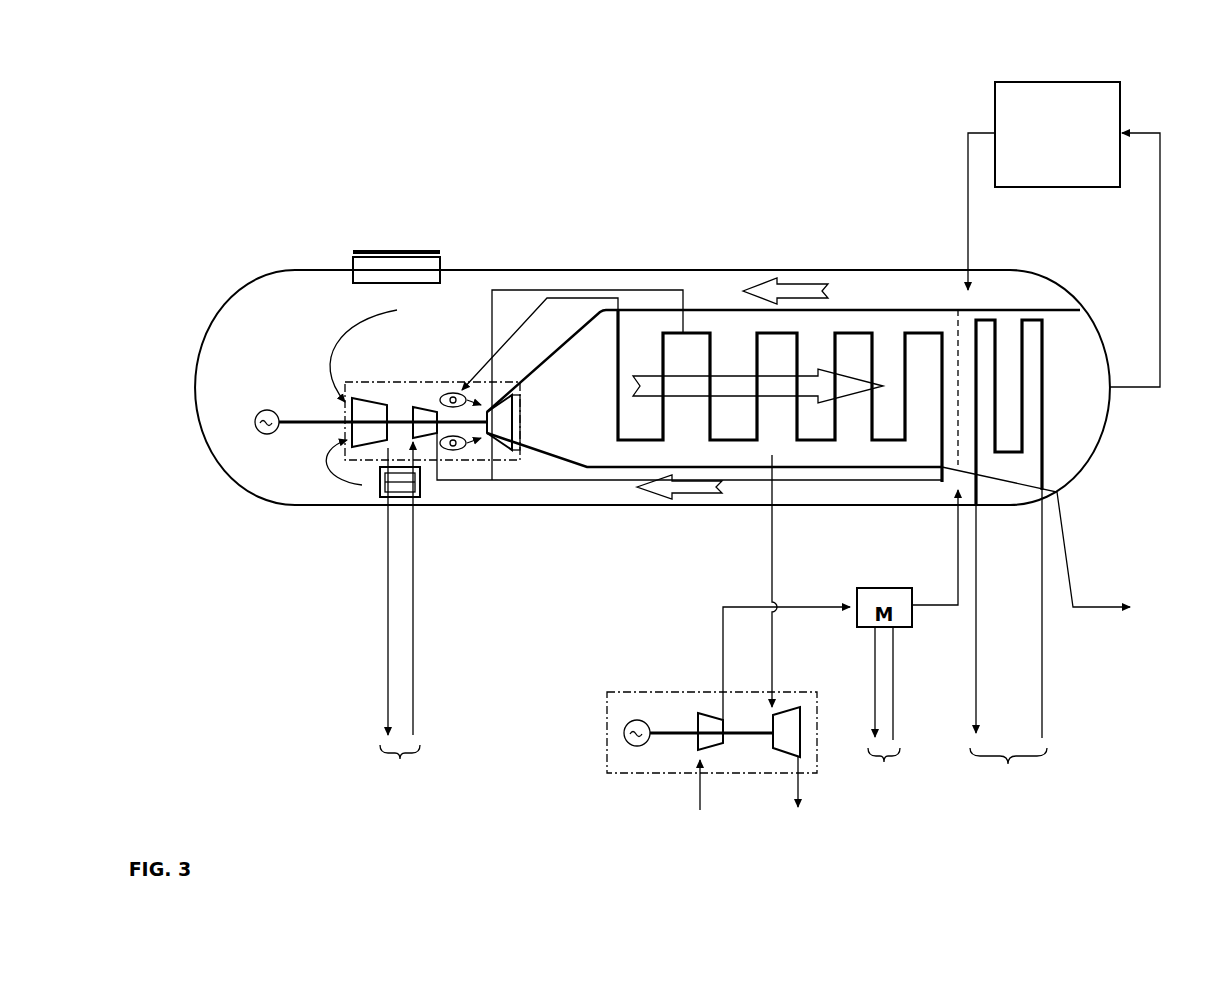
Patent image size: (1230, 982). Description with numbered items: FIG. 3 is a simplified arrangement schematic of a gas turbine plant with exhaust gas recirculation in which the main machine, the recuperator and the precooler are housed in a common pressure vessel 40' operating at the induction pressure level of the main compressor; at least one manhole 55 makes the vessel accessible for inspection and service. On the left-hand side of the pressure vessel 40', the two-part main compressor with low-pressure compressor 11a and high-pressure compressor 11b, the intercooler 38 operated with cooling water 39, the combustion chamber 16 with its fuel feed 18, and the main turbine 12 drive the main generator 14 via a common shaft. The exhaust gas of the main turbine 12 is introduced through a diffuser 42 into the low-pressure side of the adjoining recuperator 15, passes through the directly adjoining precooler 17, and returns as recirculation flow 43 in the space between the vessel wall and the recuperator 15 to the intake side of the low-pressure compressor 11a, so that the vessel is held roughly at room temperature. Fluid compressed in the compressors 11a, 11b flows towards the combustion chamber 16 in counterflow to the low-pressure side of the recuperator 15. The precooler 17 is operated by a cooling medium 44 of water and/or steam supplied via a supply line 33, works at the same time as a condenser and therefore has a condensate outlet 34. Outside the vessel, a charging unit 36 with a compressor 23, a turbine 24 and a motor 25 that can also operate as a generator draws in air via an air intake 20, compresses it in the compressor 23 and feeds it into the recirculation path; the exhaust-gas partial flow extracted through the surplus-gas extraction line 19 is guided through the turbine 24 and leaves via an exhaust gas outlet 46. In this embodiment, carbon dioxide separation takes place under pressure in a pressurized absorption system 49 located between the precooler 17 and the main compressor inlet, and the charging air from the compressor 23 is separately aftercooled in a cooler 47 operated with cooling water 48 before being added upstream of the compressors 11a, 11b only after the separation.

The pressure vessel 40' is at (648, 293).
The manhole 55 is at (398, 268).
The main generator 14 is at (267, 435).
The low-pressure compressor 11a is at (365, 422).
The high-pressure compressor 11b is at (425, 427).
The main turbine 12 is at (500, 427).
The combustion chamber 16 is at (456, 391).
The fuel feed 18 is at (458, 455).
The diffuser 42 is at (570, 377).
The supply line 33 is at (640, 290).
The recirculation flow 43 is at (803, 292).
The recuperator 15 is at (887, 325).
The precooler 17 is at (1078, 418).
The pressurized CO2 absorption system 49 is at (1046, 143).
The cooler 47 is at (903, 615).
The cooling water 48 is at (884, 762).
The cooling medium 44 is at (1008, 767).
The condensate outlet 34 is at (1100, 607).
The surplus-gas extraction line 19 is at (770, 562).
The charging unit 36 is at (605, 733).
The motor 25 is at (632, 742).
The compressor 23 is at (712, 740).
The turbine 24 is at (783, 748).
The air intake 20 is at (698, 798).
The exhaust gas outlet 46 is at (801, 808).
The intercooler 38 is at (383, 497).
The cooling water 39 is at (400, 760).